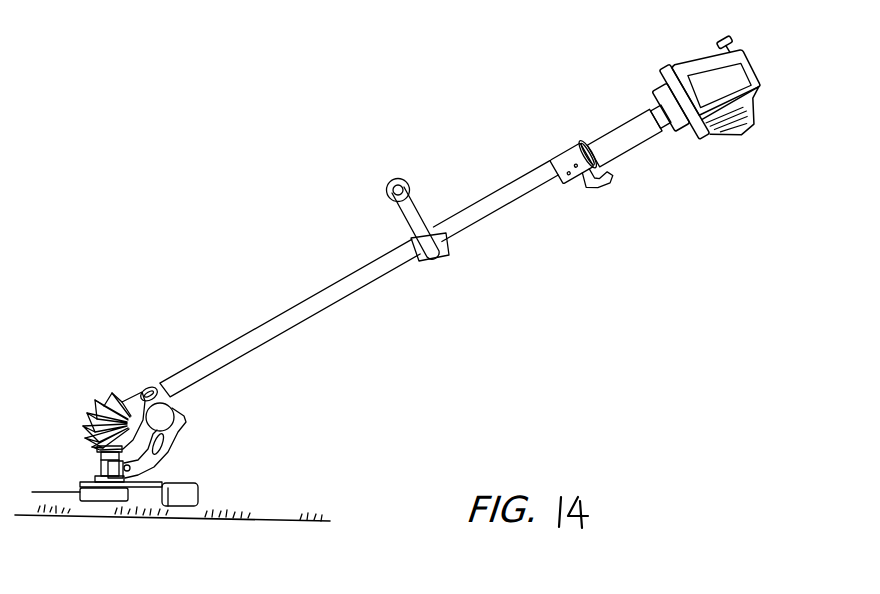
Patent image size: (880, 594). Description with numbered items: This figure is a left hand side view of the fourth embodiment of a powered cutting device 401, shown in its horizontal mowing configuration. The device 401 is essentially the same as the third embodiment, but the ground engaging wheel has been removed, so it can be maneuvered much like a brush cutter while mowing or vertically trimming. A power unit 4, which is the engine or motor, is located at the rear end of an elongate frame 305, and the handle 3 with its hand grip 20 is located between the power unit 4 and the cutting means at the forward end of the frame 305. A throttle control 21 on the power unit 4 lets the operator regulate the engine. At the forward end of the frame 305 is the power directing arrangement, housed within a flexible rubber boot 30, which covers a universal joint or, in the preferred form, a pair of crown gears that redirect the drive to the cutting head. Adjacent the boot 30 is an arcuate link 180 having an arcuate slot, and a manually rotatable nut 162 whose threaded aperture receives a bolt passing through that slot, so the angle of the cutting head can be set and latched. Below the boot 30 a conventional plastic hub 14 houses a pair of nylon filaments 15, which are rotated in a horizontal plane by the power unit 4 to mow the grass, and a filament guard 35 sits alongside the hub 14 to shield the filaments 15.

The powered cutting device 401 is at (275, 252).
The handle 3 is at (418, 221).
The hand grip 20 is at (403, 180).
The throttle control 21 is at (608, 188).
The power unit 4 is at (707, 141).
The elongate frame 305 is at (371, 283).
The flexible rubber boot 30 is at (86, 415).
The manually rotatable nut 162 is at (178, 412).
The arcuate link 180 is at (140, 460).
The filament guard 35 is at (184, 494).
The nylon filament 15 is at (32, 492).
The plastic hub 14 is at (100, 497).